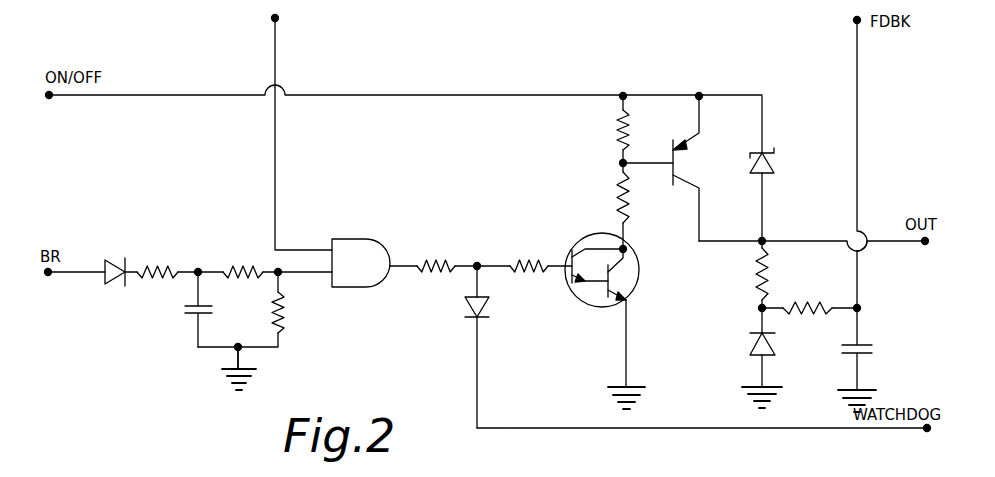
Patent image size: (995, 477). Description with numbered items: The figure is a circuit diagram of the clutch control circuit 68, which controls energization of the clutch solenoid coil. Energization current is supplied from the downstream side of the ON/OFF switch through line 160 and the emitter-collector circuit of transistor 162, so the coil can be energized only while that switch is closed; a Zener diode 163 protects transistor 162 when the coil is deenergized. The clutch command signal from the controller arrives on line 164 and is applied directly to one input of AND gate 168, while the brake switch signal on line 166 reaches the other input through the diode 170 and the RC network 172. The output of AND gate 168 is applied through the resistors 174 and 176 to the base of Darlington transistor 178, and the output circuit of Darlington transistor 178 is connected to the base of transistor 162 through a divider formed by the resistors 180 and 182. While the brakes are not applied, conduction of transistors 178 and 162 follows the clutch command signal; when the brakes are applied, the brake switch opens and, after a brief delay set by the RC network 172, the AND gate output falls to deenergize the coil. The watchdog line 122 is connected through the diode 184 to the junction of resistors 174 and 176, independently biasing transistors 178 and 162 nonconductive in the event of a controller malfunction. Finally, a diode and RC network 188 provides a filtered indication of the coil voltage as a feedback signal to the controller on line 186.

The clutch control circuit 68 is at (530, 57).
The line 122 is at (838, 430).
The line 160 is at (410, 97).
The transistor 162 is at (674, 172).
The Zener diode 163 is at (777, 153).
The line 164 is at (275, 63).
The line 166 is at (80, 271).
The AND gate 168 is at (373, 245).
The diode 170 is at (112, 287).
The RC network 172 is at (182, 345).
The resistor 174 is at (442, 258).
The resistor 176 is at (538, 260).
The Darlington transistor 178 is at (578, 301).
The resistor 180 is at (615, 146).
The resistor 182 is at (620, 185).
The diode 184 is at (462, 312).
The line 186 is at (858, 111).
The diode and RC network 188 is at (868, 306).